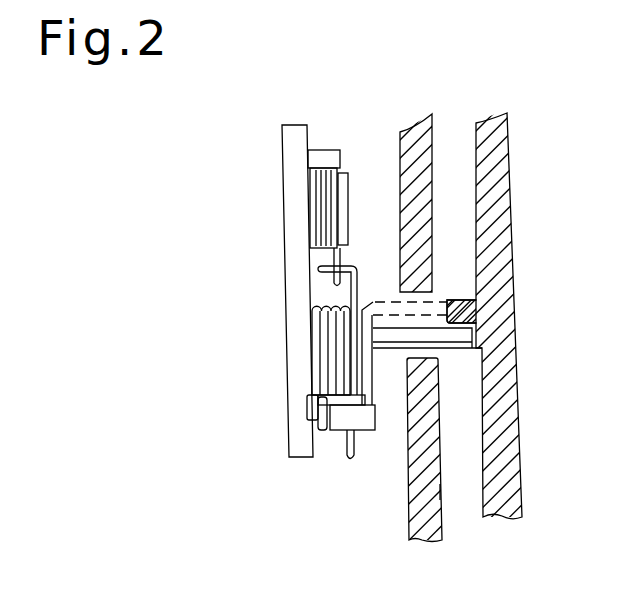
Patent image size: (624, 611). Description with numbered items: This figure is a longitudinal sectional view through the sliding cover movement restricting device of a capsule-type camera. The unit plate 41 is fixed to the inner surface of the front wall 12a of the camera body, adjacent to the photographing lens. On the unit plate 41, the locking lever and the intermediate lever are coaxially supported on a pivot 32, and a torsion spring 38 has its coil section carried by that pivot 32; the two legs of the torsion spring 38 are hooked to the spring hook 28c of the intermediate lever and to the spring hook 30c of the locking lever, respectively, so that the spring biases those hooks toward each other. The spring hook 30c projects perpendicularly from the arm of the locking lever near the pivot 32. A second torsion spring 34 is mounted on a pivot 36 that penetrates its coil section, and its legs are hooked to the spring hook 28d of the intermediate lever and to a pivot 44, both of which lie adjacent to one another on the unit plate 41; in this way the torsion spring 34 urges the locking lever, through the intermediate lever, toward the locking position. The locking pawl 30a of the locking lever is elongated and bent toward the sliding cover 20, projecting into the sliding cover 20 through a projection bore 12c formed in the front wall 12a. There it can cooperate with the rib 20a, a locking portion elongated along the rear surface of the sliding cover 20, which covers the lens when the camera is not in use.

The unit plate 41 is at (285, 168).
The pivot 44 is at (325, 150).
The torsion spring 34 is at (308, 191).
The pivot 36 is at (347, 183).
The spring hook 28d is at (357, 263).
The torsion spring 38 is at (311, 350).
The spring hook 28c is at (307, 410).
The pivot 32 is at (384, 380).
The spring hook 30c is at (363, 426).
The locking pawl 30a is at (430, 315).
The sliding cover 20 is at (505, 150).
The rib 20a is at (452, 298).
The projection bore 12c is at (420, 358).
The front wall 12a is at (437, 484).